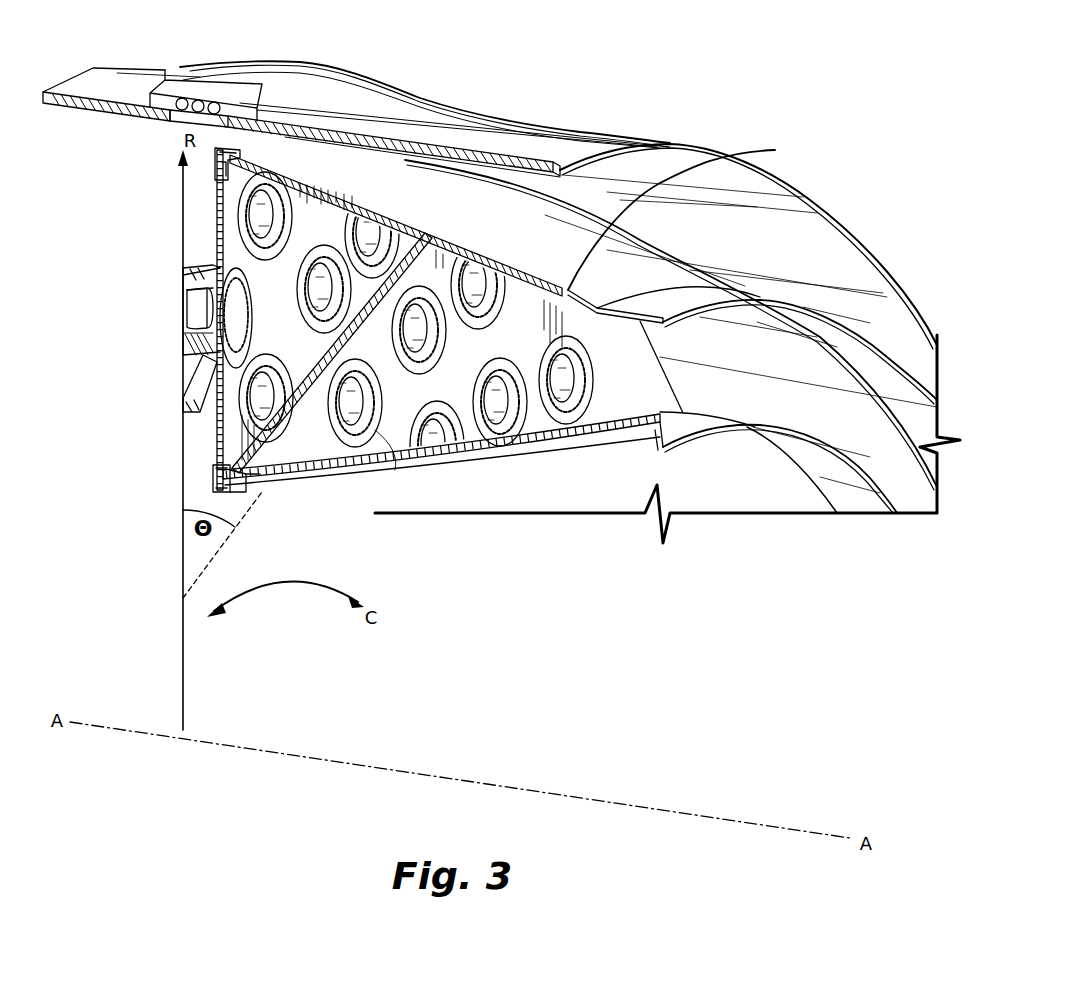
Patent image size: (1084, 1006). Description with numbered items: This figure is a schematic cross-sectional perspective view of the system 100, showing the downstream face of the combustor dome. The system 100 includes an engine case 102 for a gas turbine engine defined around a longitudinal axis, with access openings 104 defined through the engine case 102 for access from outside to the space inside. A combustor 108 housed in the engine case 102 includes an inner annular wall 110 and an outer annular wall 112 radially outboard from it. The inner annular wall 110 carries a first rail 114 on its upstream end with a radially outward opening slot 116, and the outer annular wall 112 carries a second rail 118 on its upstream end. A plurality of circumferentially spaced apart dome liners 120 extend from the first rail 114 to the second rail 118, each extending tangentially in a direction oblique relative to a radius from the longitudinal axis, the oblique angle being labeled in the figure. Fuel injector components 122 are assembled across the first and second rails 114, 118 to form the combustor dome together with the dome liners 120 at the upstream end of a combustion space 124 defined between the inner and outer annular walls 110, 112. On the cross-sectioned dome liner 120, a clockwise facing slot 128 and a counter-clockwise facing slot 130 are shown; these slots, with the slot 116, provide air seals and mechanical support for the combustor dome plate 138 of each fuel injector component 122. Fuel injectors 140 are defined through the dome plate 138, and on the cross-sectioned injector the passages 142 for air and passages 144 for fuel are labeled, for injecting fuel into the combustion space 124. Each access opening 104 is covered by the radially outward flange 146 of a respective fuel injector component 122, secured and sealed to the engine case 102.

The system 100 is at (719, 98).
The engine case 102 is at (538, 131).
The access openings 104 is at (173, 115).
The combustor 108 is at (532, 465).
The inner annular wall 110 is at (387, 466).
The outer annular wall 112 is at (760, 152).
The first rail 114 is at (247, 492).
The radially outward opening slot 116 is at (208, 459).
The second rail 118 is at (258, 150).
The dome liners 120 is at (217, 168).
The fuel injector components 122 is at (186, 334).
The combustion space 124 is at (671, 336).
The clockwise facing slot 128 is at (222, 138).
The counter-clockwise facing slot 130 is at (208, 198).
The combustor dome plate 138 is at (385, 442).
The fuel injectors 140 is at (330, 294).
The passages for air 142 is at (198, 262).
The passages for fuel 144 is at (188, 289).
The radially outward flange 146 is at (340, 73).